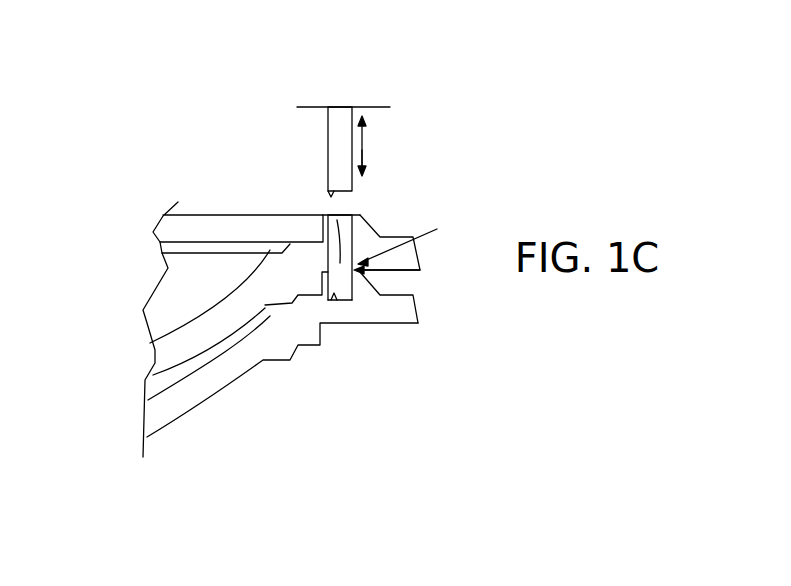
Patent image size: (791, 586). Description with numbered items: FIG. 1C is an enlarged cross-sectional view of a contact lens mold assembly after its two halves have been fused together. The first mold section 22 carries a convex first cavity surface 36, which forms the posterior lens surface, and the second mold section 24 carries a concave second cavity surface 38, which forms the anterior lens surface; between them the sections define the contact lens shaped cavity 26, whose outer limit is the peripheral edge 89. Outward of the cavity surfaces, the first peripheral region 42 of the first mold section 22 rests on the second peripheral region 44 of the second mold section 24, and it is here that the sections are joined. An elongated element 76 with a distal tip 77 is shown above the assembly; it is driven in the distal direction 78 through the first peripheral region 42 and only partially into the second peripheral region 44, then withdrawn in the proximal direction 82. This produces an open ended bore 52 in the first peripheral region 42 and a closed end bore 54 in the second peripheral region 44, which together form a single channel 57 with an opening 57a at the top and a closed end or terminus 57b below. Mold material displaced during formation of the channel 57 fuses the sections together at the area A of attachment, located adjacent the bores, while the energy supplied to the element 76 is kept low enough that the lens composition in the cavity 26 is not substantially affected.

The elongated element 76 is at (355, 108).
The distal tip 77 is at (329, 196).
The proximal direction 82 is at (362, 127).
The distal direction 78 is at (370, 157).
The open ended bore 52 is at (322, 235).
The first mold section 22 is at (379, 214).
The first cavity surface 36 is at (197, 366).
The contact lens shaped cavity 26 is at (175, 380).
The second cavity surface 38 is at (216, 368).
The peripheral edge 89 is at (264, 311).
The channel 57 is at (328, 215).
The opening 57a is at (343, 215).
The closed end or terminus 57b is at (336, 297).
The closed end bore 54 is at (353, 300).
The first peripheral region 42 is at (388, 238).
The area of attachment A is at (406, 241).
The second peripheral region 44 is at (417, 307).
The second mold section 24 is at (402, 327).